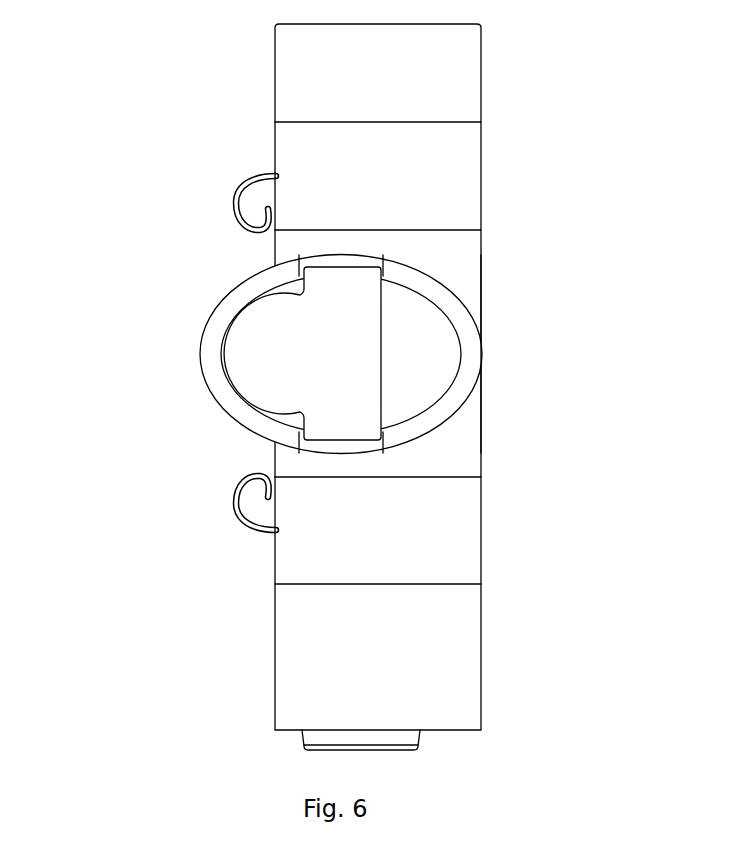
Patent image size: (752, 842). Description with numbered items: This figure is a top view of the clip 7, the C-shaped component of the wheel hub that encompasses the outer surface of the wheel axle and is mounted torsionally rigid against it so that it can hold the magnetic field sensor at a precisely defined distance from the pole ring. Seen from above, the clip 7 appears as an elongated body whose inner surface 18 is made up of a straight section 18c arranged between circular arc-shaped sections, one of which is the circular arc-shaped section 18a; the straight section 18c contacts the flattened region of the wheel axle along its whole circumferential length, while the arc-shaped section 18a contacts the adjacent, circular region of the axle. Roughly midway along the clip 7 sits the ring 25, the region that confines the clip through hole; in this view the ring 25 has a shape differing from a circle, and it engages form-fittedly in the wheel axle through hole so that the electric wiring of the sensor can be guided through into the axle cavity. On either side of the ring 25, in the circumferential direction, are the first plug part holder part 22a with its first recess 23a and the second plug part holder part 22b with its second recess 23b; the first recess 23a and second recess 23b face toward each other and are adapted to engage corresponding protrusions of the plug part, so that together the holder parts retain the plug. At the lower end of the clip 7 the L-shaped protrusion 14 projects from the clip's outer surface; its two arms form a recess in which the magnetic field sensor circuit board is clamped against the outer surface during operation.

The clip 7 is at (76, 186).
The L-shaped protrusion 14 is at (300, 738).
The inner surface 18 is at (452, 190).
The circular arc-shaped section 18a is at (462, 569).
The straight section 18c is at (464, 457).
The first plug part holder part 22a is at (242, 517).
The second plug part holder part 22b is at (238, 198).
The first recess 23a is at (270, 482).
The second recess 23b is at (268, 228).
The ring 25 is at (208, 320).